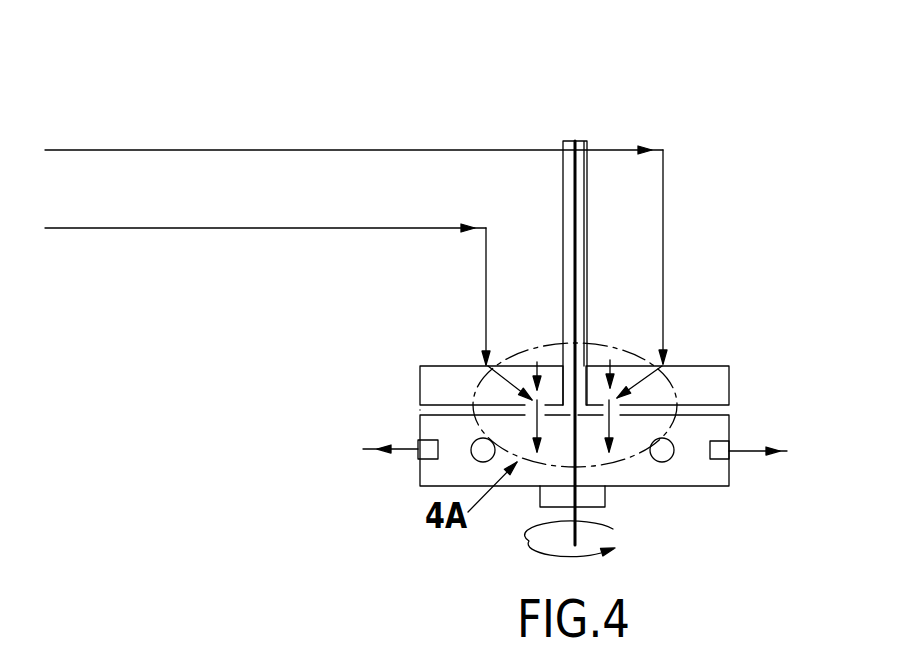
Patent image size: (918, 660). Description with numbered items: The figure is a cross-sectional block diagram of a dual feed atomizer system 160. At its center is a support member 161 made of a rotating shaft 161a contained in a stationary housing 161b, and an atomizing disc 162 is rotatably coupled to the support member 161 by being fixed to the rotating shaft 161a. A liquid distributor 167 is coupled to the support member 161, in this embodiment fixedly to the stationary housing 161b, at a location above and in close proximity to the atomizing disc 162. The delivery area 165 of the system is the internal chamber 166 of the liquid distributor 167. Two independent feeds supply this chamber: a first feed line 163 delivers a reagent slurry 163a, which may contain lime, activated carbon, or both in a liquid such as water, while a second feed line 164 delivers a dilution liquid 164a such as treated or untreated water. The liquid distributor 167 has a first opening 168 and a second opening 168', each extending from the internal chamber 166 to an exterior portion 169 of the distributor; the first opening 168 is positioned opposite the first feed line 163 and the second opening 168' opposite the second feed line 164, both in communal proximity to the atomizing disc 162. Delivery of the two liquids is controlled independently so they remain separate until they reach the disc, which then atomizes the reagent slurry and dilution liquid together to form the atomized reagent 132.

The atomized reagent 132 is at (398, 452).
The atomizer system 160 is at (720, 250).
The support member 161 is at (545, 182).
The rotating shaft 161a is at (577, 268).
The stationary housing 161b is at (588, 209).
The atomizing disc 162 is at (695, 488).
The first feed line 163 is at (110, 148).
The reagent slurry 163a is at (665, 195).
The second feed line 164 is at (110, 228).
The dilution liquid 164a is at (486, 305).
The delivery area 165 is at (747, 383).
The internal chamber 166 is at (723, 397).
The liquid distributor 167 is at (687, 367).
The first opening 168 is at (632, 372).
The second opening 168' is at (519, 372).
The exterior portion 169 is at (713, 406).